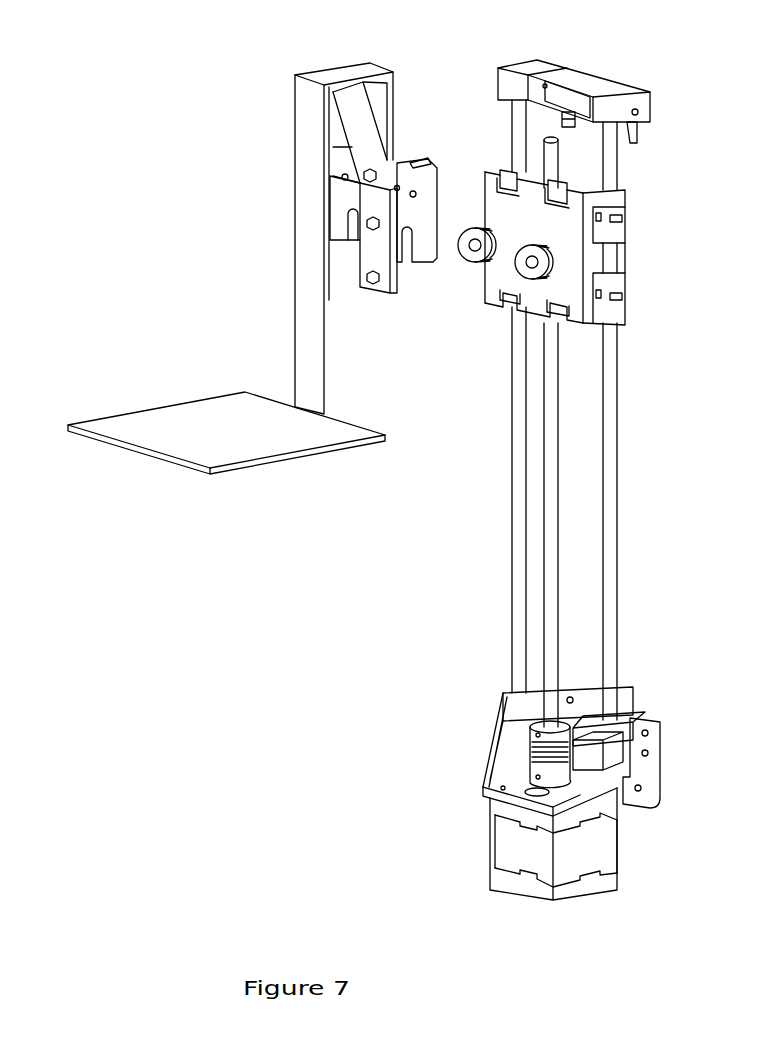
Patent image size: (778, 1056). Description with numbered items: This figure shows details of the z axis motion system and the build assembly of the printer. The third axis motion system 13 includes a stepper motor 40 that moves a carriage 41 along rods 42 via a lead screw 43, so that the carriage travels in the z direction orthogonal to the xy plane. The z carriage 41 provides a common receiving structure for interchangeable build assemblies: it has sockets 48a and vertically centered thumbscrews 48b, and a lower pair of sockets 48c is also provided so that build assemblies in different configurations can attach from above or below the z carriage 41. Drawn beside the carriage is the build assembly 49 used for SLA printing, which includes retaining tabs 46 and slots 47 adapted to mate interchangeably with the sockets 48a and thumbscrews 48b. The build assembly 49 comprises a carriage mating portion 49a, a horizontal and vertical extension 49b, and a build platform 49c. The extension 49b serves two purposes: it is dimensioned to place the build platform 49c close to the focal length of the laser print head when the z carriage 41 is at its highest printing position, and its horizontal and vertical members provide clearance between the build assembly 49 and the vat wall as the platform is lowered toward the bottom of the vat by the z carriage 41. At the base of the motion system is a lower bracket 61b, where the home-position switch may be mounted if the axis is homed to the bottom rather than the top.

The third axis motion system 13 is at (421, 648).
The stepper motor 40 is at (517, 847).
The carriage 41 is at (587, 280).
The rods 42 is at (515, 497).
The lead screw 43 is at (550, 502).
The retaining tabs 46 is at (413, 160).
The slots 47 is at (408, 253).
The sockets 48a is at (563, 180).
The thumbscrews 48b is at (560, 258).
The lower pair of sockets 48c is at (557, 310).
The build assembly 49 is at (138, 262).
The carriage mating portion 49a is at (411, 204).
The horizontal and vertical extension 49b is at (308, 98).
The build platform 49c is at (187, 442).
The lower bracket 61b is at (592, 753).